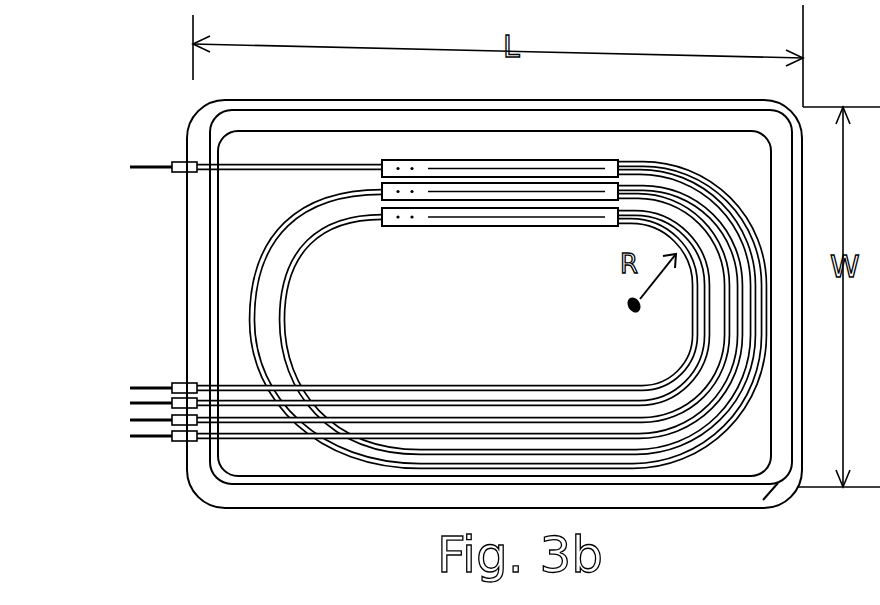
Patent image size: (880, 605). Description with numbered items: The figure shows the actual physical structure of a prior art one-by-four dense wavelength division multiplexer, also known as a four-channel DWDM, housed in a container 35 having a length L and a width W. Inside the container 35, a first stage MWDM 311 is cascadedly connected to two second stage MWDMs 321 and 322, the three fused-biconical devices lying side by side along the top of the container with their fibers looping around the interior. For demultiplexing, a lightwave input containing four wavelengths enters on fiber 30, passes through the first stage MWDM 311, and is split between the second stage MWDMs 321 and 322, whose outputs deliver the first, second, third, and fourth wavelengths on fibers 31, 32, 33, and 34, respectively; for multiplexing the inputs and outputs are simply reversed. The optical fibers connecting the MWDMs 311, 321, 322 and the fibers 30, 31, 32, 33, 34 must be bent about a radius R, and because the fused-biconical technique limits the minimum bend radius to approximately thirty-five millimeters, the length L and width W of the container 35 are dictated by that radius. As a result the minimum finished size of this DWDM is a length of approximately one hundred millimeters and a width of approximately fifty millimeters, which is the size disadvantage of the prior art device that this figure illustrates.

The fiber 30 is at (238, 167).
The fiber 31 is at (417, 319).
The fiber 32 is at (401, 314).
The fiber 33 is at (411, 314).
The fiber 34 is at (395, 310).
The container 35 is at (316, 507).
The first stage MWDM 311 is at (431, 167).
The second stage MWDM 321 is at (493, 194).
The second stage MWDM 322 is at (563, 220).